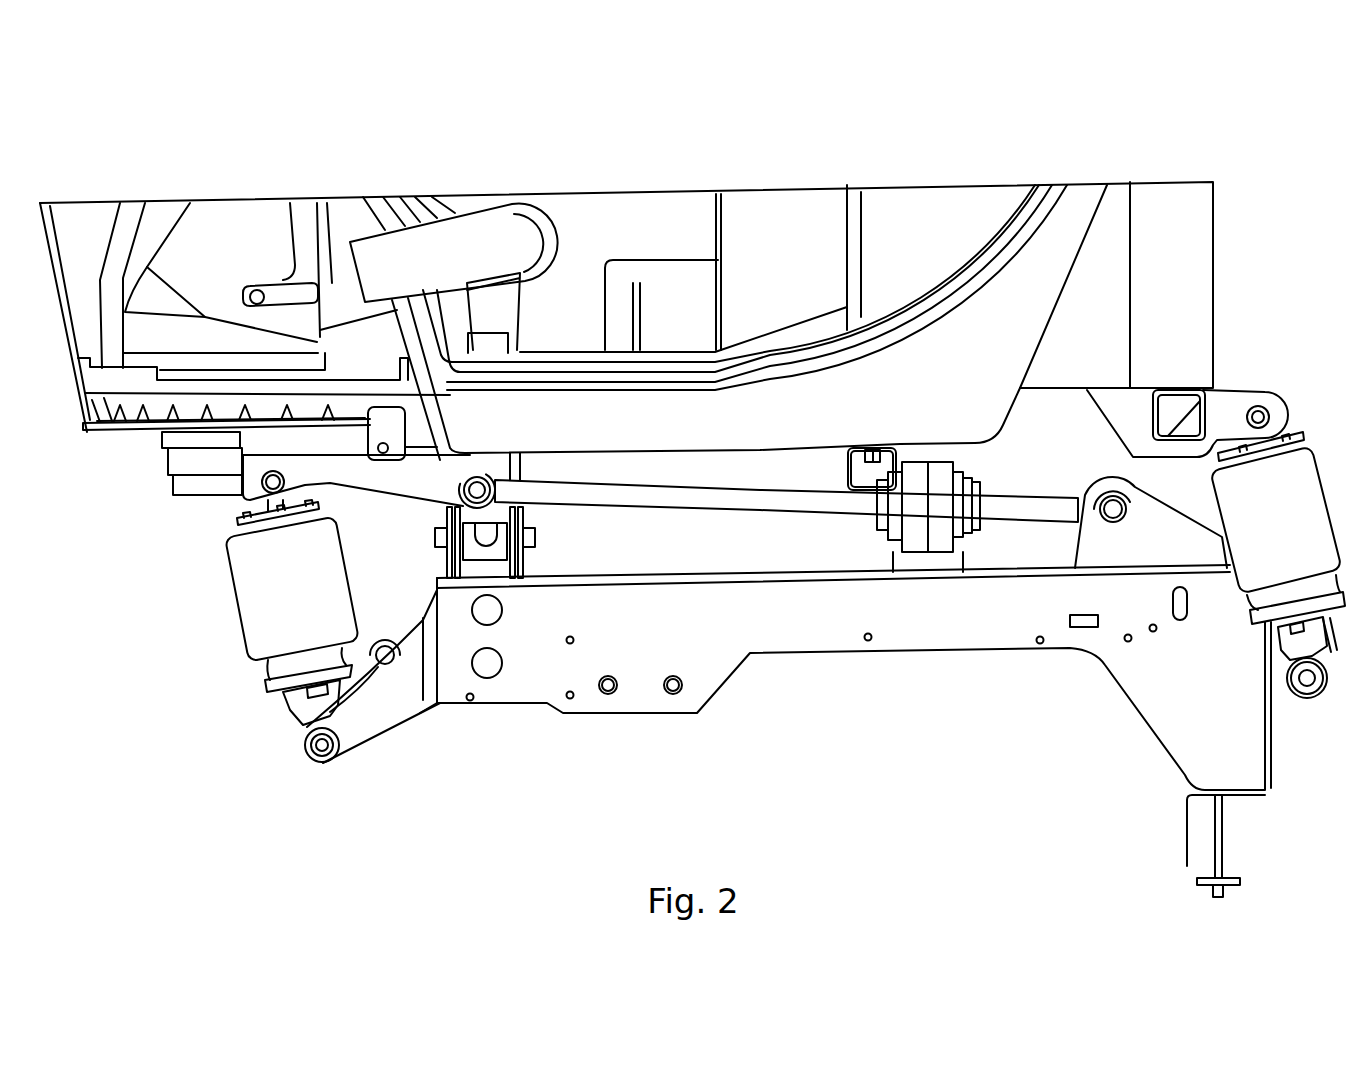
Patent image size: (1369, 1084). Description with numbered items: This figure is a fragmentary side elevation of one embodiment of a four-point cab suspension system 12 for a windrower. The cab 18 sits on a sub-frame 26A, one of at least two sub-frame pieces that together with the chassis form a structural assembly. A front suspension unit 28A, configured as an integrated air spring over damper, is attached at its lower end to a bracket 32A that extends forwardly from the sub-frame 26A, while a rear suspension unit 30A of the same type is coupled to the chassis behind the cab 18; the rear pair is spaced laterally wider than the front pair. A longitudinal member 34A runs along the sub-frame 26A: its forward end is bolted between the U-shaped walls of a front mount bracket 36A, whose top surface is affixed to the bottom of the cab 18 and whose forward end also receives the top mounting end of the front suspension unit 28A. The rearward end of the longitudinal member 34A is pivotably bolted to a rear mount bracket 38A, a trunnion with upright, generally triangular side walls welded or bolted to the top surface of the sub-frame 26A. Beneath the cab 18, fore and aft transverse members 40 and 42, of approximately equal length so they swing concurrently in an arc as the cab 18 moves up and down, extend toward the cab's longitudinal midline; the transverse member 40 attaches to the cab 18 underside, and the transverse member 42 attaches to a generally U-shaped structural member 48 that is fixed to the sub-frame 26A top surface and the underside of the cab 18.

The 4-point cab suspension system 12 is at (262, 152).
The cab 18 is at (1022, 348).
The sub-frame 26A is at (982, 617).
The front suspension unit 28A is at (263, 602).
The rear suspension unit 30A is at (1290, 490).
The bracket 32A is at (397, 700).
The longitudinal member 34A is at (700, 497).
The front mount bracket 36A is at (253, 477).
The rear mount bracket 38A is at (1150, 540).
The transverse member 40 is at (487, 537).
The transverse member 42 is at (913, 533).
The structural member 48 is at (863, 480).